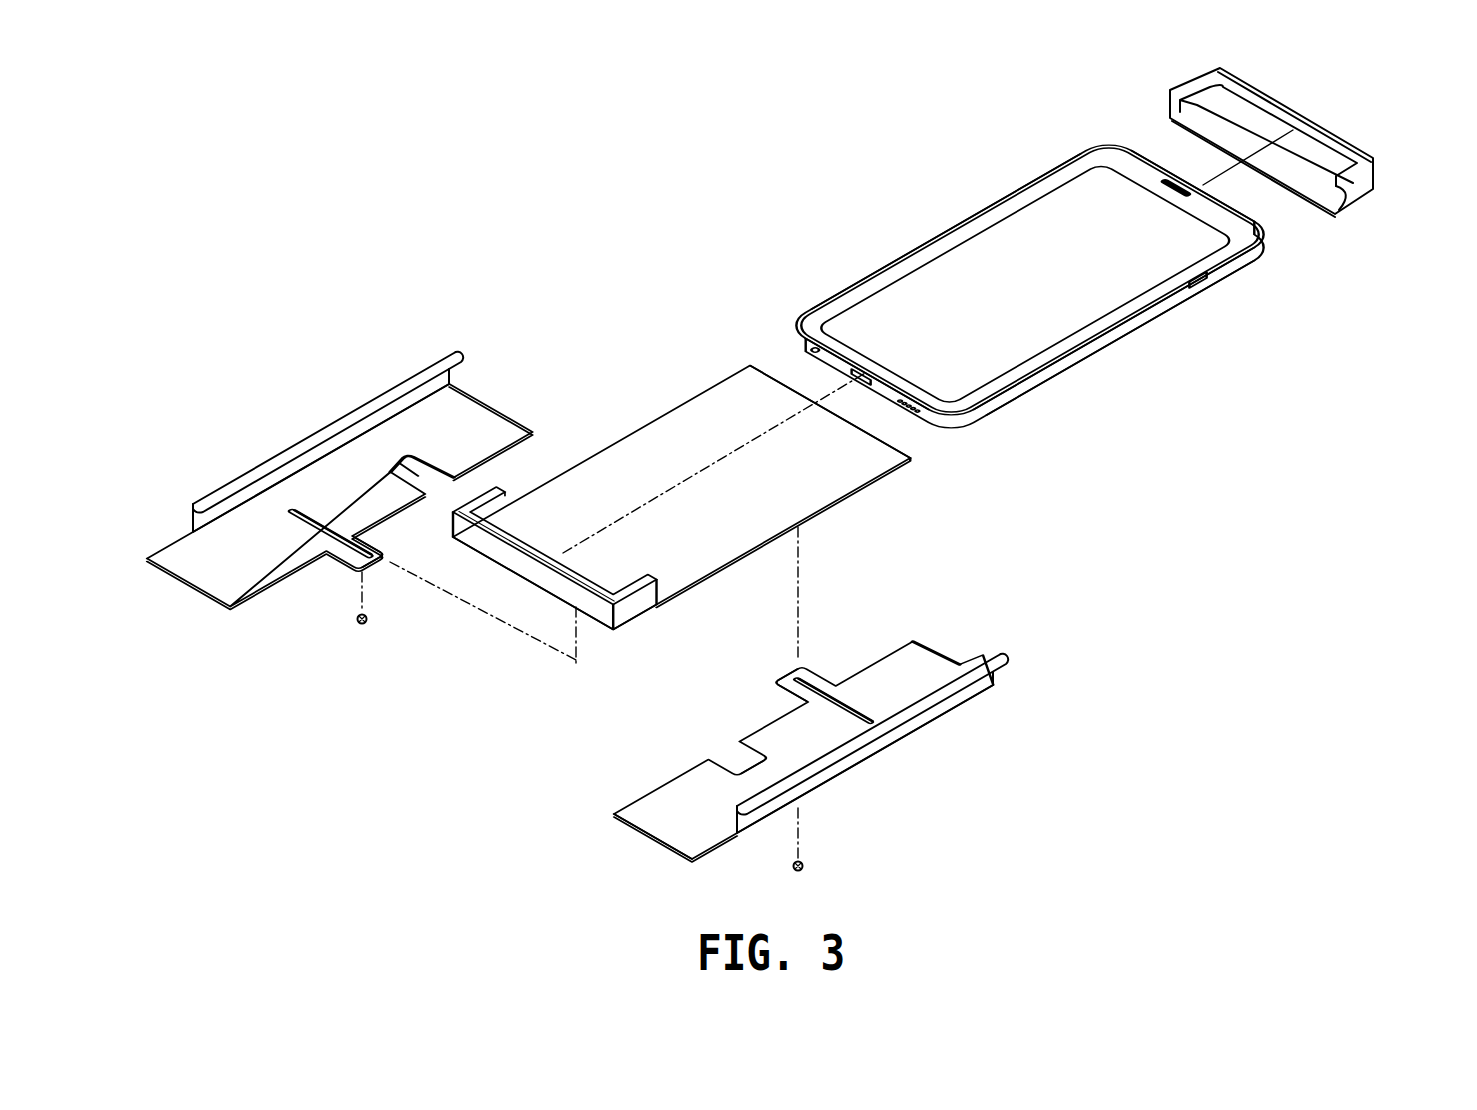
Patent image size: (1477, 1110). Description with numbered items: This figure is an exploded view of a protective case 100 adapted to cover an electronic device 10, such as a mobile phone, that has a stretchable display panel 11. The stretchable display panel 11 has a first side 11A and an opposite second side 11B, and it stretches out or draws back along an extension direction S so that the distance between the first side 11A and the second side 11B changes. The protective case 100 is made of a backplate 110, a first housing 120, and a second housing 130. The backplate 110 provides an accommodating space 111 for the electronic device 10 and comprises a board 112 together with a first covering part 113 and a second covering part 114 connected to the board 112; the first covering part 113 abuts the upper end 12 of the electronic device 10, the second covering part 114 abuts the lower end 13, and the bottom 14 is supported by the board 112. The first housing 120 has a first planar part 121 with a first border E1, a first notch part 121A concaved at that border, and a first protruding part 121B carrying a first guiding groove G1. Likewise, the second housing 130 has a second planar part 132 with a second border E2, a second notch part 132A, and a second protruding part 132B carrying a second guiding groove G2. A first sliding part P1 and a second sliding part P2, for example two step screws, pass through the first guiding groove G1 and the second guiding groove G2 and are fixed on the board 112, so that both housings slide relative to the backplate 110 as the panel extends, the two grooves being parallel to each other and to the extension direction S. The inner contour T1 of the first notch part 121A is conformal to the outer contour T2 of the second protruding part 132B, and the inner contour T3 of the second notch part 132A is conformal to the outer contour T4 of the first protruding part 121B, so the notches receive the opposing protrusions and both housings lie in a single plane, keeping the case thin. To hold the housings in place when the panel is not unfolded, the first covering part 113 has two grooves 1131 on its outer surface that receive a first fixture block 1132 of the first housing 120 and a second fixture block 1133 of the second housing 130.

The electronic device 10 is at (128, 80).
The stretchable display panel 11 is at (992, 237).
The first side 11A is at (888, 268).
The second side 11B is at (1108, 312).
The upper end 12 is at (1117, 160).
The lower end 13 is at (838, 330).
The bottom 14 is at (1037, 380).
The protective case 100 is at (265, 128).
The backplate 110 is at (329, 88).
The accommodating space 111 is at (650, 437).
The board 112 is at (858, 477).
The first covering part 113 is at (1363, 198).
The grooves 1131 is at (1357, 190).
The first fixture block 1132 is at (457, 352).
The second fixture block 1133 is at (1010, 660).
The second covering part 114 is at (598, 613).
The first housing 120 is at (408, 378).
The first planar part 121 is at (200, 560).
The first notch part 121A is at (417, 488).
The first protruding part 121B is at (383, 563).
The second housing 130 is at (928, 717).
The second planar part 132 is at (677, 823).
The second notch part 132A is at (770, 735).
The second protruding part 132B is at (782, 675).
The first guiding groove G1 is at (308, 528).
The second guiding groove G2 is at (820, 685).
The inner contour T1 is at (407, 470).
The outer contour T2 is at (803, 665).
The inner contour T3 is at (727, 757).
The outer contour T4 is at (347, 563).
The first sliding part P1 is at (360, 625).
The second sliding part P2 is at (807, 865).
The first border E1 is at (240, 607).
The second border E2 is at (658, 783).
The extension direction S is at (653, 192).